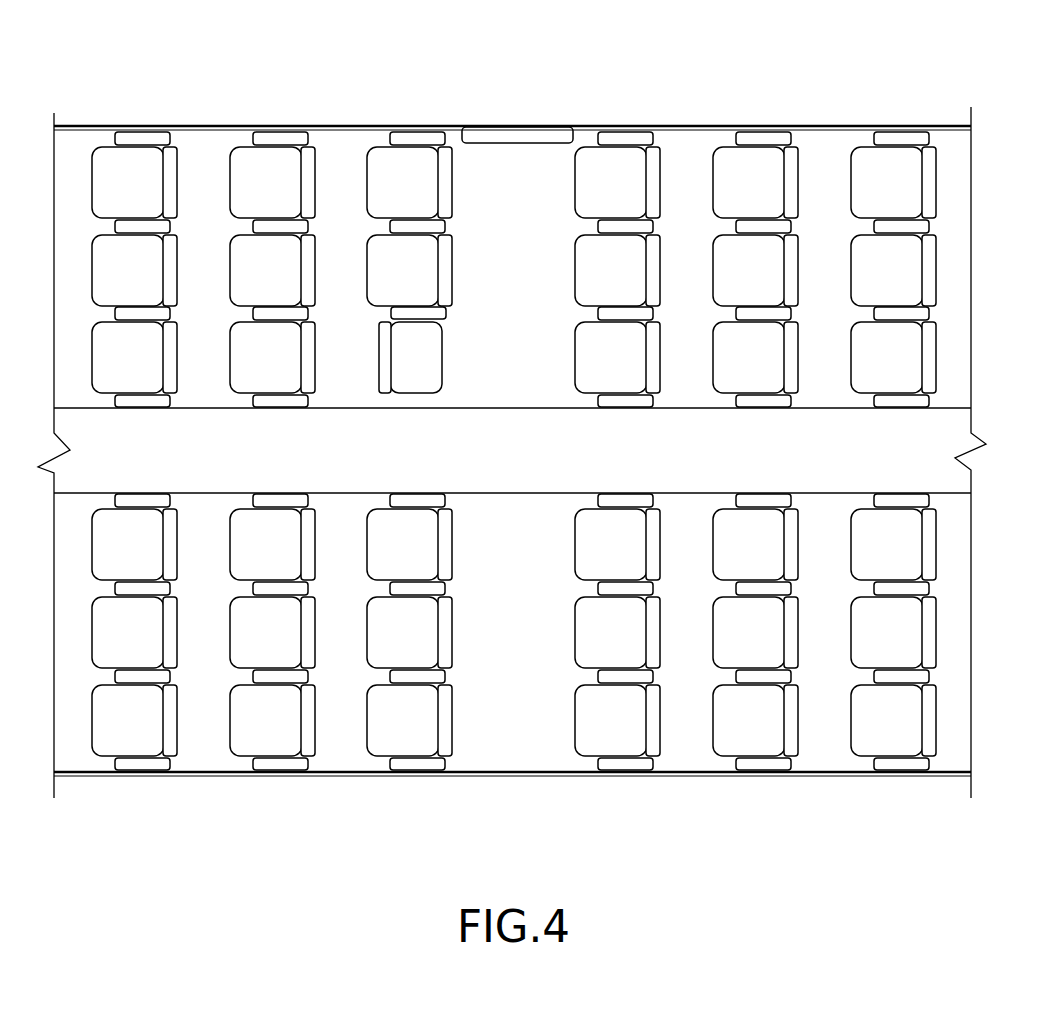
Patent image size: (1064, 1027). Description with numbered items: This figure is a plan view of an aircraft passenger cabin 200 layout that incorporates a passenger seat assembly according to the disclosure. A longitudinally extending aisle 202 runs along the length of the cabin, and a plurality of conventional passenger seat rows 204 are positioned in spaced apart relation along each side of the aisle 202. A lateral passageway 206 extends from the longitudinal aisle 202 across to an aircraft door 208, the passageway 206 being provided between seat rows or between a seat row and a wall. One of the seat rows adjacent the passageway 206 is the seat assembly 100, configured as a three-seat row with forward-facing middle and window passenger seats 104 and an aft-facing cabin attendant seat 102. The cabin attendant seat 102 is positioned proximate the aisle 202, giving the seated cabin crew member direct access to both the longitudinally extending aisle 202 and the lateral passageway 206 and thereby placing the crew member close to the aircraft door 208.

The aircraft passenger cabin 200 is at (972, 60).
The longitudinally extending aisle 202 is at (947, 442).
The passenger seat row 204 is at (263, 160).
The lateral passageway 206 is at (540, 165).
The aircraft door 208 is at (515, 135).
The seat assembly 100 is at (387, 228).
The passenger seat 104 is at (420, 196).
The cabin attendant seat (CAS) 102 is at (433, 368).